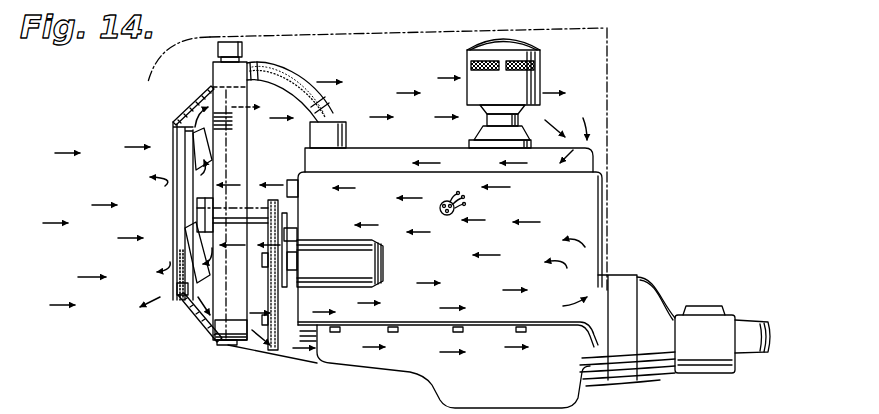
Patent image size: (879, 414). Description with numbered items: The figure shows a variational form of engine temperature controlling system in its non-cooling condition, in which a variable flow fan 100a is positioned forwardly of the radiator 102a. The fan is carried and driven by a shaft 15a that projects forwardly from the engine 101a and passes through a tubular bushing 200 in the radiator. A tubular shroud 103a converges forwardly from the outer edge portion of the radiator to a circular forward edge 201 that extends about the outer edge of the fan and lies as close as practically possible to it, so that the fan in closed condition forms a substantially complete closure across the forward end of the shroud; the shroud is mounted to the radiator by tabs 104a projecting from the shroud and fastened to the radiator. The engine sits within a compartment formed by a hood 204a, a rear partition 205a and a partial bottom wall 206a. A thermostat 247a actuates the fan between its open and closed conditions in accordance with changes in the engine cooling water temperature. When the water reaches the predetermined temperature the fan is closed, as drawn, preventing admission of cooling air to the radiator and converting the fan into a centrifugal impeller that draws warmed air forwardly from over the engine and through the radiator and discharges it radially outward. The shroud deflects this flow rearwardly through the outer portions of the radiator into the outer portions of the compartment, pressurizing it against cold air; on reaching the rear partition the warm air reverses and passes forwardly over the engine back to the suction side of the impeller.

The hood 204a is at (437, 27).
The rear partition 205a is at (607, 152).
The partial bottom wall 206a is at (305, 366).
The tubular shroud 103a is at (190, 111).
The variable flow fan 100a is at (172, 236).
The circular forward edge 201 is at (183, 296).
The radiator 102a is at (238, 145).
The tabs 104a is at (228, 347).
The shaft 15a is at (253, 208).
The engine 101a is at (405, 160).
The tubular bushing 200 is at (290, 226).
The thermostat 247a is at (447, 216).